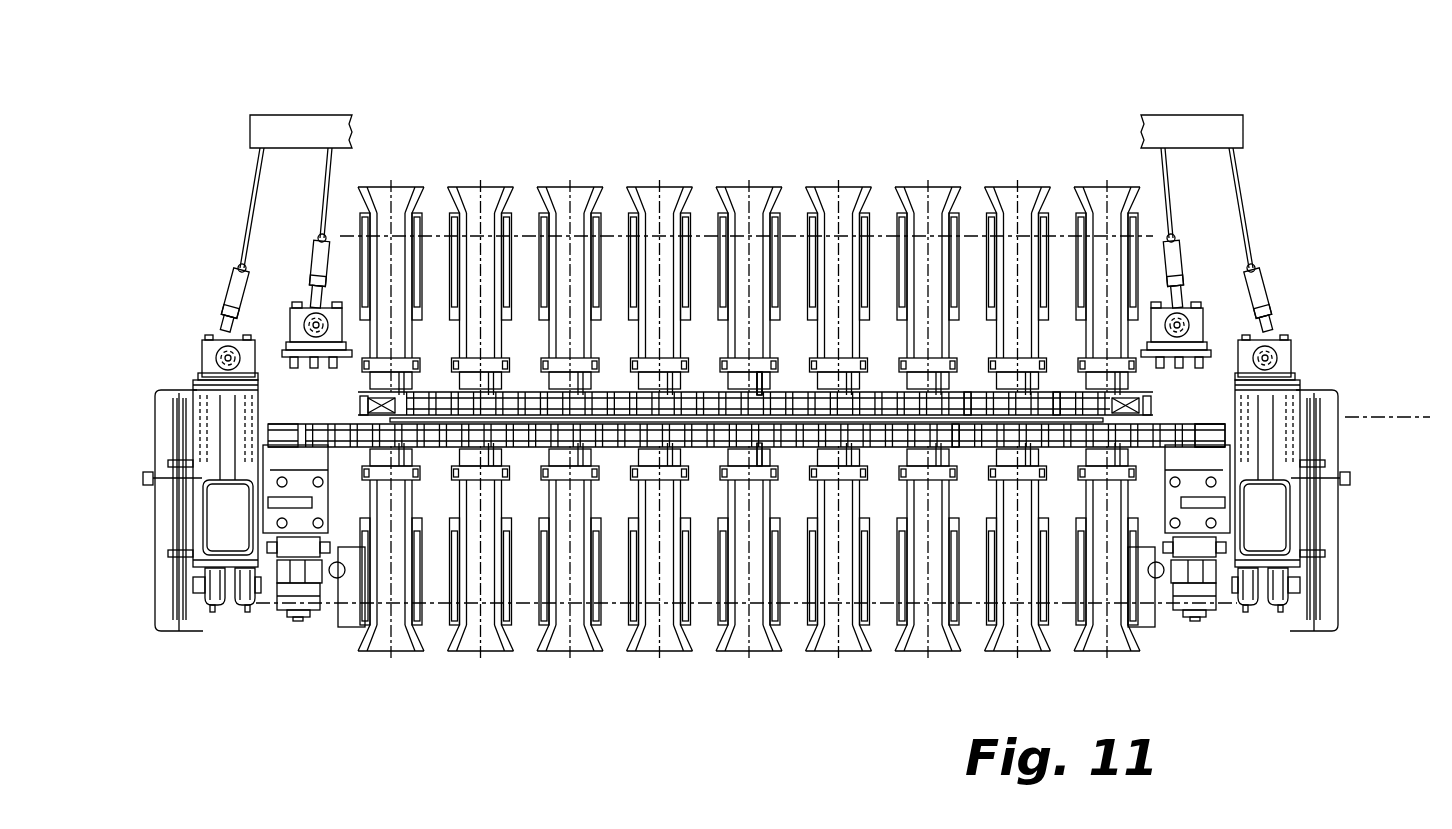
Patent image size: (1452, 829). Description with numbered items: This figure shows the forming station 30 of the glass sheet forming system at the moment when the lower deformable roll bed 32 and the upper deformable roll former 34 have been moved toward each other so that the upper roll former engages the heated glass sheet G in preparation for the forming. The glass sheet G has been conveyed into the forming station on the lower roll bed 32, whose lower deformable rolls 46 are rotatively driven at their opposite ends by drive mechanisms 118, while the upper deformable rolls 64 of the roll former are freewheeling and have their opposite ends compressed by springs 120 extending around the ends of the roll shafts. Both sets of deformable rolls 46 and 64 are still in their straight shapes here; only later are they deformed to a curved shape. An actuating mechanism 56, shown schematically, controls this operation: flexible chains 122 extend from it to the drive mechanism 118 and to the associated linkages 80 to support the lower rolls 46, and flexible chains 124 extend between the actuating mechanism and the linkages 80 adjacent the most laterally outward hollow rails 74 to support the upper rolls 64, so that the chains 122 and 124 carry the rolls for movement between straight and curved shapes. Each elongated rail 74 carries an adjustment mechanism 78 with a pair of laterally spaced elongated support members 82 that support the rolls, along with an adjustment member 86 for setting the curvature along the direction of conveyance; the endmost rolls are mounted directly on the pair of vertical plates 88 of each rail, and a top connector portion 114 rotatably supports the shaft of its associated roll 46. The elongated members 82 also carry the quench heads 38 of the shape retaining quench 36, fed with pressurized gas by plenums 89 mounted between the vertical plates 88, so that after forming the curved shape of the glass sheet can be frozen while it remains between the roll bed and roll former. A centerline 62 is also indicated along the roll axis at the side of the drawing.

The forming station 30 is at (998, 72).
The lower deformable roll bed 32 is at (1190, 410).
The upper deformable roll former 34 is at (1091, 385).
The shape retaining quench 36 is at (782, 377).
The quench heads 38 is at (735, 455).
The lower deformable rolls 46 is at (955, 447).
The actuating mechanism 56 is at (1243, 133).
The axis of rotation 62 is at (1387, 418).
The upper deformable rolls 64 is at (966, 392).
The elongated rails 74 is at (789, 591).
The adjustment mechanism 78 is at (706, 591).
The linkages 80 is at (527, 628).
The elongated support members 82 is at (771, 475).
The adjustment member 86 is at (770, 600).
The vertical plates 88 is at (772, 597).
The plenums 89 is at (770, 508).
The top connector portion 114 is at (753, 444).
The drive mechanisms 118 is at (1334, 387).
The springs 120 is at (1133, 392).
The flexible chains 122 is at (1243, 207).
The flexible chains 124 is at (1160, 175).
The glass sheet G is at (1056, 392).